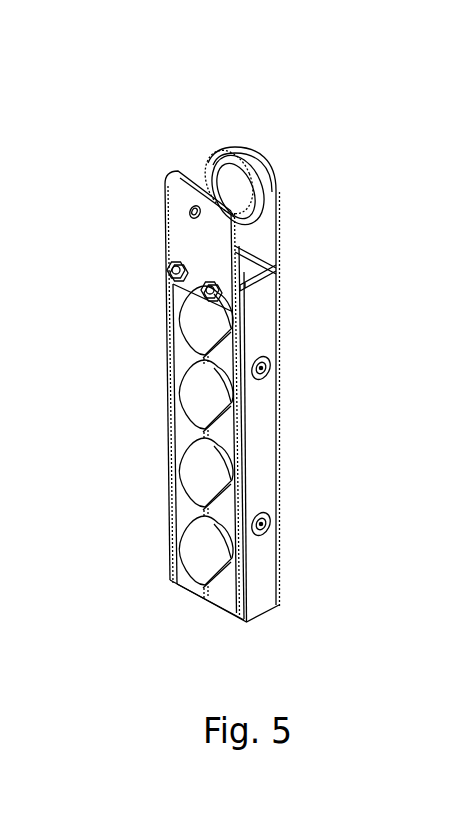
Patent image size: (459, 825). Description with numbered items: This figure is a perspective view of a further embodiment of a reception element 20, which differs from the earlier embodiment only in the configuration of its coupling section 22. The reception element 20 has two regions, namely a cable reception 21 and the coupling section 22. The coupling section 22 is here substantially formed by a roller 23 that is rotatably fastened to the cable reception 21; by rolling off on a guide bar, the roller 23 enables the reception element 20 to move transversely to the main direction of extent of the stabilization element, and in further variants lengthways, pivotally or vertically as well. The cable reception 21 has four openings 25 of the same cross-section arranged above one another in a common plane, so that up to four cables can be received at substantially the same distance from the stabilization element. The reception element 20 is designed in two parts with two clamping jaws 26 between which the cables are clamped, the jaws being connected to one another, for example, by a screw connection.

The reception element 20 is at (272, 132).
The cable reception 21 is at (262, 473).
The coupling section 22 is at (269, 227).
The roller 23 is at (164, 162).
The openings 25 is at (157, 465).
The clamping jaws 26 is at (149, 598).